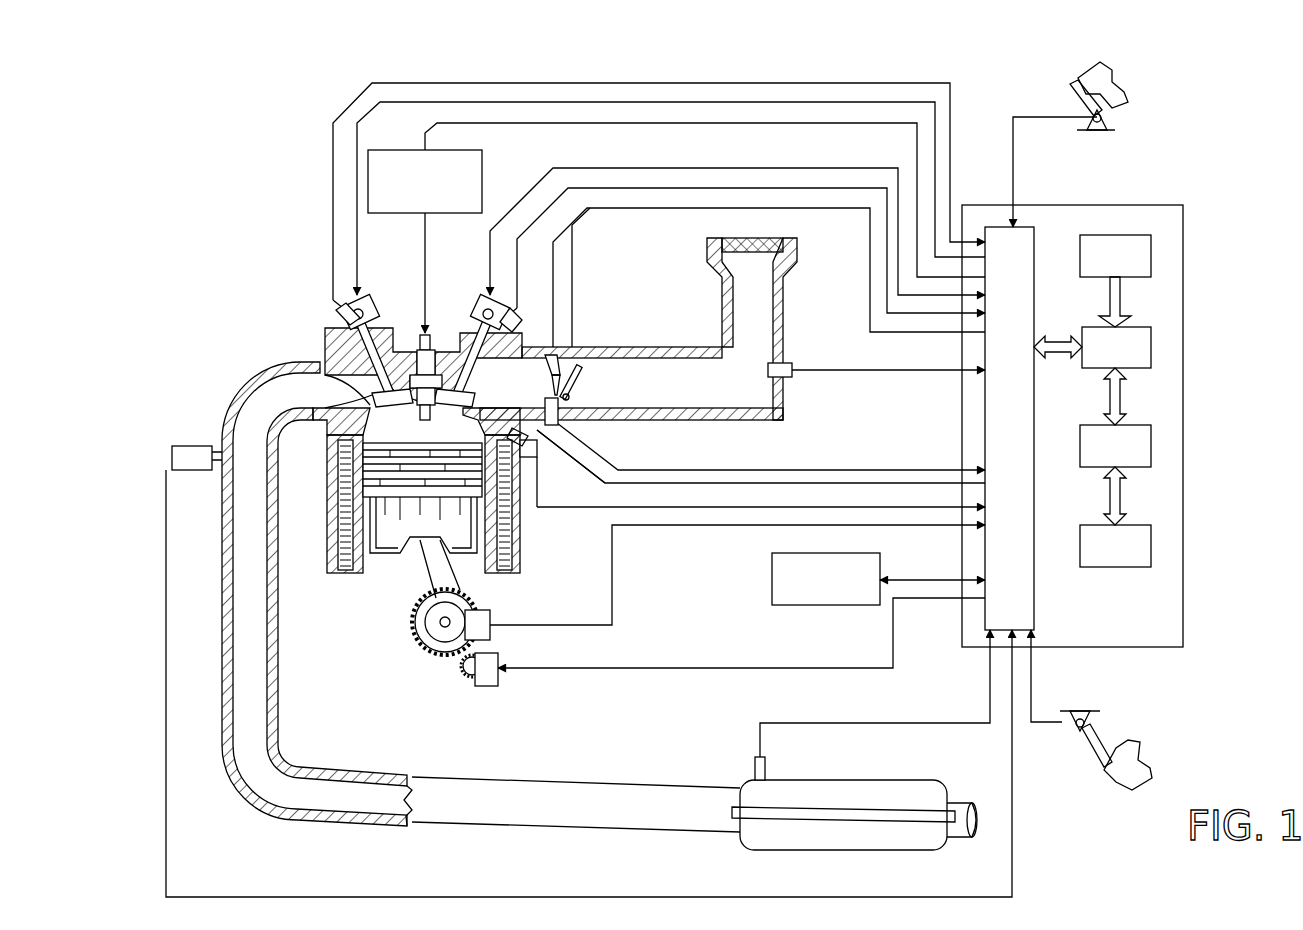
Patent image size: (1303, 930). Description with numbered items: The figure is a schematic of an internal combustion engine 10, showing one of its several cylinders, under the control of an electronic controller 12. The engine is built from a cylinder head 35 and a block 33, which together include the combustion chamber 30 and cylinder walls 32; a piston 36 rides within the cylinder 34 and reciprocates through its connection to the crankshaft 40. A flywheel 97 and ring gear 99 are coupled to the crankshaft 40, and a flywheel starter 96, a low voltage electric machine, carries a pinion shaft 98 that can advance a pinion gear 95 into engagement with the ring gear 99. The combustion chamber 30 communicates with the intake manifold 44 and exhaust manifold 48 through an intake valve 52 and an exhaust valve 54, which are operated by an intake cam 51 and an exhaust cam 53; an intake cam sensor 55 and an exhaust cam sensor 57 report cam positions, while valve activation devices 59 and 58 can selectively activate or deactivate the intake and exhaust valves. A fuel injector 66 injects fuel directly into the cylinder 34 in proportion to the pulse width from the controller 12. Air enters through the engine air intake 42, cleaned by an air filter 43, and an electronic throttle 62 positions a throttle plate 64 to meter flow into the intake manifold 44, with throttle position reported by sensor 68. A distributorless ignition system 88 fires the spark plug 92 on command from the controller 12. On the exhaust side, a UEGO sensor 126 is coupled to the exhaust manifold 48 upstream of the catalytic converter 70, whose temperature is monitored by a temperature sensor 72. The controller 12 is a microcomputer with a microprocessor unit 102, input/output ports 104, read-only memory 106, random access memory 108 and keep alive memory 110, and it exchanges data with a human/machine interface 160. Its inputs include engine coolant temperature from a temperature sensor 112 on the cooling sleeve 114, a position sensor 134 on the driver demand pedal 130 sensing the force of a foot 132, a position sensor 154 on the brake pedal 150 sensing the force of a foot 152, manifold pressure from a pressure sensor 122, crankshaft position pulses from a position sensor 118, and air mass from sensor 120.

The internal combustion engine 10 is at (265, 290).
The electronic controller 12 is at (1178, 207).
The combustion chamber 30 is at (423, 423).
The cylinder walls 32 is at (360, 574).
The block 33 is at (325, 470).
The cylinder 34 is at (395, 585).
The cylinder head 35 is at (323, 328).
The piston 36 is at (418, 540).
The crankshaft 40 is at (420, 655).
The engine air intake 42 is at (703, 258).
The air filter 43 is at (765, 256).
The intake manifold 44 is at (548, 396).
The exhaust manifold 48 is at (306, 402).
The intake cam 51 is at (482, 298).
The intake valve 52 is at (470, 398).
The exhaust cam 53 is at (366, 298).
The exhaust valve 54 is at (332, 378).
The intake cam sensor 55 is at (506, 320).
The exhaust cam sensor 57 is at (342, 308).
The valve activation device 58 is at (370, 312).
The valve activation device 59 is at (480, 318).
The electronic throttle 62 is at (578, 384).
The throttle plate 64 is at (560, 406).
The fuel injector 66 is at (538, 444).
The throttle position sensor 68 is at (548, 358).
The catalytic converter 70 is at (775, 780).
The temperature sensor 72 is at (766, 764).
The distributorless ignition system 88 is at (388, 150).
The spark plug 92 is at (436, 338).
The pinion gear 95 is at (475, 680).
The flywheel starter 96 is at (490, 675).
The flywheel 97 is at (415, 630).
The pinion shaft 98 is at (465, 678).
The ring gear 99 is at (435, 660).
The microprocessor unit 102 is at (1152, 342).
The input/output ports 104 is at (1036, 290).
The read-only memory 106 is at (1152, 252).
The random access memory 108 is at (1152, 442).
The keep alive memory 110 is at (1152, 542).
The temperature sensor 112 is at (538, 460).
The cooling sleeve 114 is at (512, 525).
The position sensor 118 is at (485, 614).
The air mass sensor 120 is at (790, 366).
The pressure sensor 122 is at (562, 418).
The Universal Exhaust Gas Oxygen sensor 126 is at (172, 448).
The driver demand pedal 130 is at (1072, 92).
The foot 132 is at (1128, 82).
The position sensor 134 is at (1106, 118).
The brake pedal 150 is at (1104, 770).
The foot 152 is at (1140, 742).
The position sensor 154 is at (1070, 725).
The human/machine interface 160 is at (826, 579).